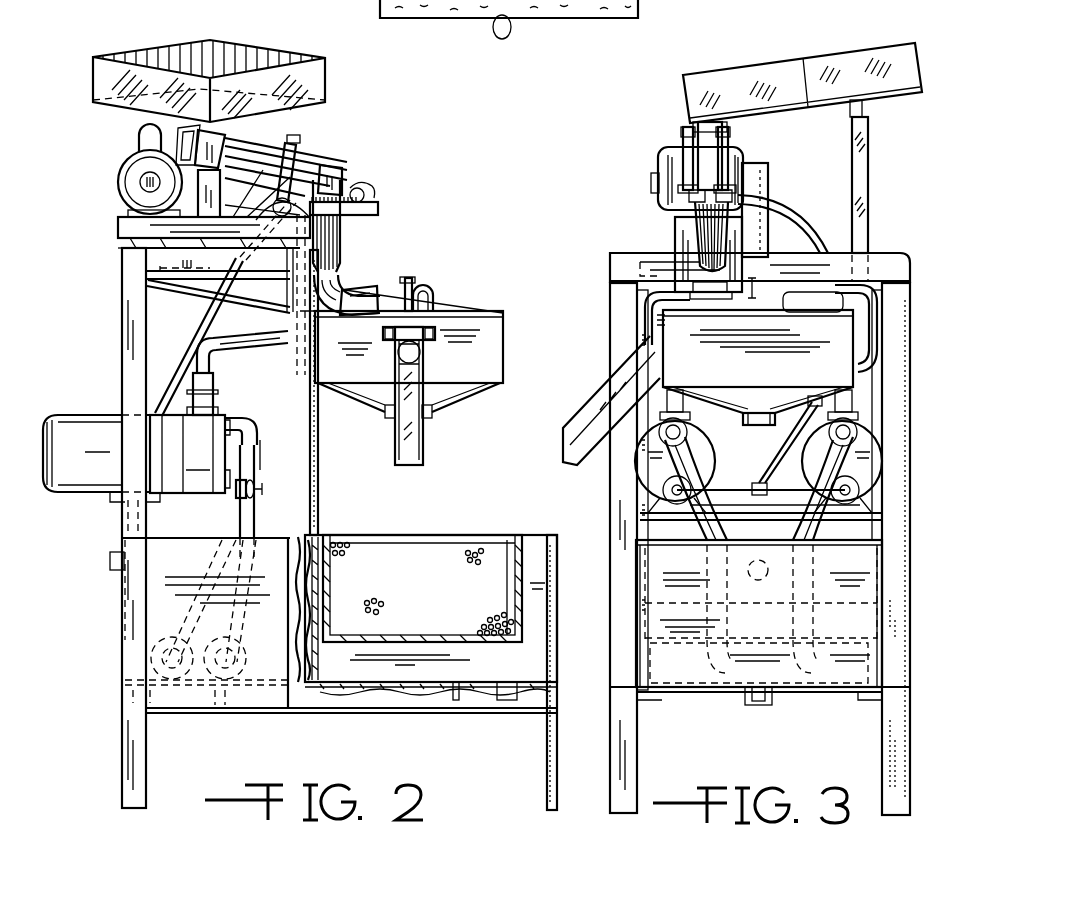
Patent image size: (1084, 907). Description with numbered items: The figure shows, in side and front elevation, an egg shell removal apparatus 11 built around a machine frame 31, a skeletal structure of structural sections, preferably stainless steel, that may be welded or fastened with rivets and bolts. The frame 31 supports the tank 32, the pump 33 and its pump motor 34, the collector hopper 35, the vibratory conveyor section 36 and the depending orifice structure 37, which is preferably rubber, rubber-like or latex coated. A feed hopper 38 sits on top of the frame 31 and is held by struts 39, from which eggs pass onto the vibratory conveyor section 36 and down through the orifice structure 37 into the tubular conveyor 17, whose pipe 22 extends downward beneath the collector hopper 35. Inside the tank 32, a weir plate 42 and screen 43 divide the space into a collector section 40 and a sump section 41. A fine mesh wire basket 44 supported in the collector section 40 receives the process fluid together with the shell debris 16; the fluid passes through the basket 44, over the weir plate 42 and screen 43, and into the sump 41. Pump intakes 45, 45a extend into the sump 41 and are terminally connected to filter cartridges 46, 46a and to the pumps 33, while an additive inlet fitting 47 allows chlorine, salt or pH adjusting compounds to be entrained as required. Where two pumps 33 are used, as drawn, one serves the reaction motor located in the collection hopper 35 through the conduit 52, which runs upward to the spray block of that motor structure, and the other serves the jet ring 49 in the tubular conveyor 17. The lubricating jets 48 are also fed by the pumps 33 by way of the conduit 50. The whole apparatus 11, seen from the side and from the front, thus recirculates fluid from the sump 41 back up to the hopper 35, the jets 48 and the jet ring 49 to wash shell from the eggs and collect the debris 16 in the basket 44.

In FIG. 2, the ore treating apparatus 11 is at (262, 40).
In FIG. 3, the ore treating apparatus 11 is at (787, 42).
In FIG. 2, the shell debris 16 is at (478, 620).
In FIG. 2, the tubular conveyor 17 is at (387, 292).
In FIG. 2, the discharge pipe / spout 22 is at (420, 438).
In FIG. 3, the discharge pipe / spout 22 is at (578, 424).
In FIG. 2, the machine frame 31 is at (117, 300).
In FIG. 3, the machine frame 31 is at (602, 280).
In FIG. 2, the tank 32 is at (555, 545).
In FIG. 3, the tank 32 is at (650, 573).
In FIG. 2, the pump 33 is at (212, 432).
In FIG. 3, the pump 33 is at (710, 458).
In FIG. 2, the pump motor 34 is at (78, 420).
In FIG. 3, the collector hopper 35 is at (793, 371).
In FIG. 2, the vibratory conveyor section 36 is at (326, 137).
In FIG. 3, the vibratory conveyor section 36 is at (754, 139).
In FIG. 2, the depending orifice structure 37 is at (348, 252).
In FIG. 3, the depending orifice structure 37 is at (692, 228).
In FIG. 2, the feed hopper 38 is at (325, 70).
In FIG. 3, the feed hopper 38 is at (683, 88).
In FIG. 2, the struts 39 is at (143, 126).
In FIG. 3, the struts 39 is at (868, 170).
In FIG. 2, the collector section 40 is at (450, 664).
In FIG. 2, the sump section 41 is at (167, 617).
In FIG. 2, the weir plate 42 is at (333, 663).
In FIG. 2, the screen 43 is at (328, 564).
In FIG. 2, the fine mesh wire basket 44 is at (510, 548).
In FIG. 2, the pump intake 45 is at (235, 527).
In FIG. 3, the pump intake 45 is at (853, 528).
In FIG. 2, the pump intake 45a is at (262, 452).
In FIG. 3, the pump intake 45a is at (717, 511).
In FIG. 2, the filter cartridge 46 is at (155, 660).
In FIG. 3, the filter cartridge 46 is at (830, 673).
In FIG. 2, the filter cartridge 46a is at (247, 656).
In FIG. 3, the filter cartridge 46a is at (692, 673).
In FIG. 2, the additive inlet fitting 47 is at (250, 493).
In FIG. 2, the lubricating jets 48 is at (375, 196).
In FIG. 2, the jet ring 49 is at (355, 290).
In FIG. 2, the conduit 50 is at (189, 327).
In FIG. 3, the conduit 50 is at (757, 480).
In FIG. 2, the conduit 52 is at (434, 297).
In FIG. 3, the conduit 52 is at (878, 348).